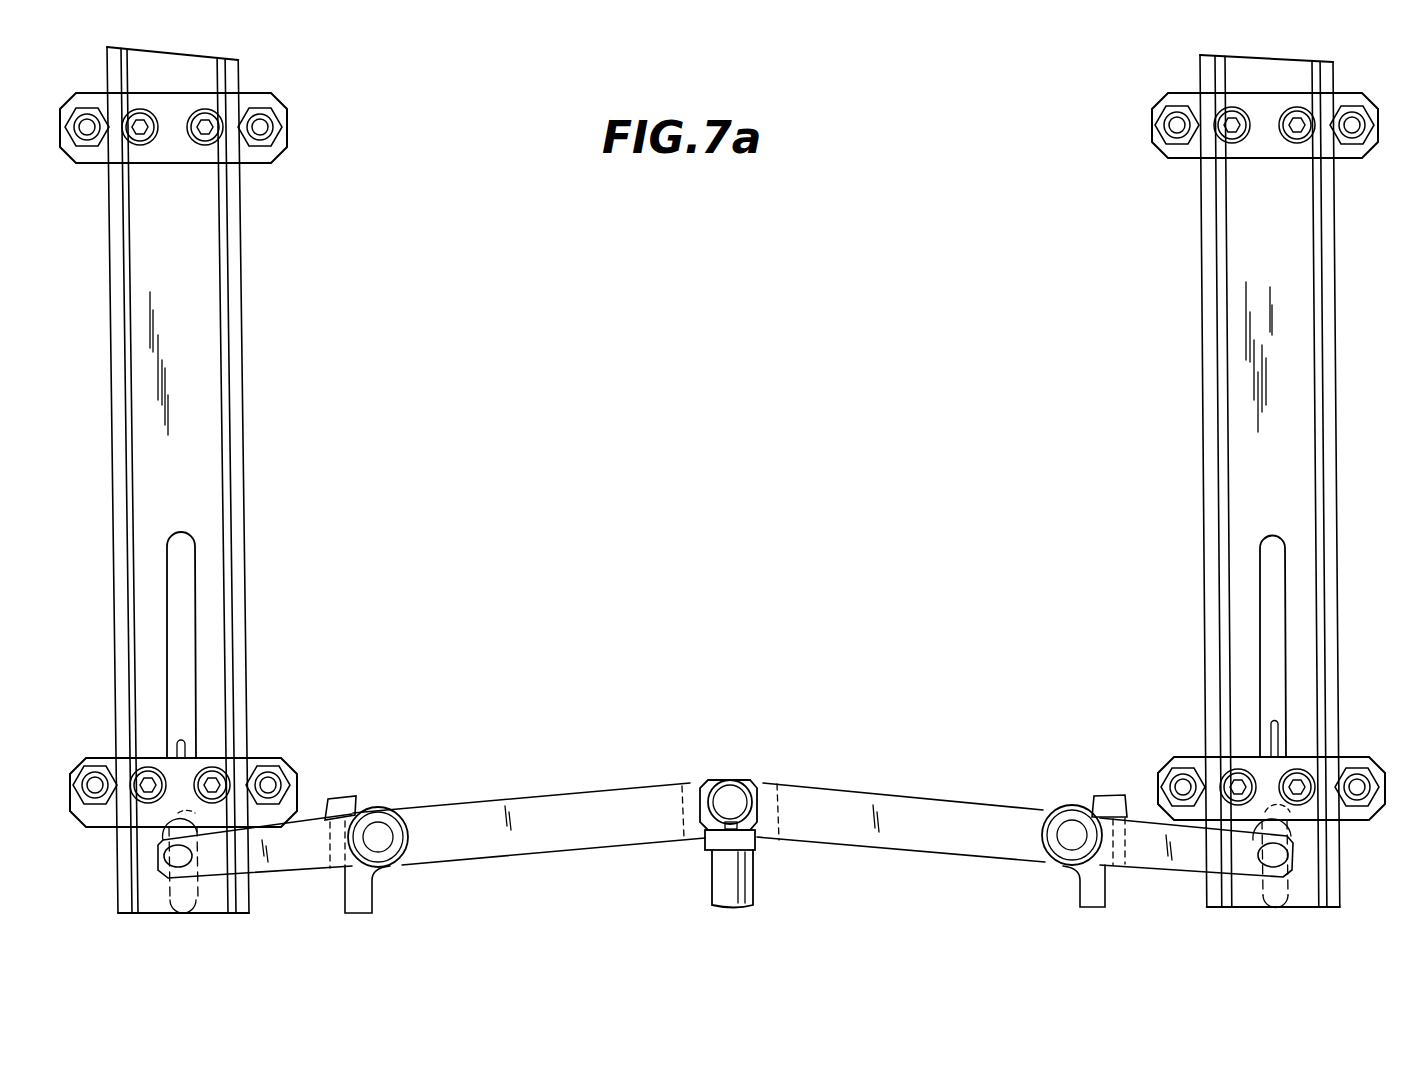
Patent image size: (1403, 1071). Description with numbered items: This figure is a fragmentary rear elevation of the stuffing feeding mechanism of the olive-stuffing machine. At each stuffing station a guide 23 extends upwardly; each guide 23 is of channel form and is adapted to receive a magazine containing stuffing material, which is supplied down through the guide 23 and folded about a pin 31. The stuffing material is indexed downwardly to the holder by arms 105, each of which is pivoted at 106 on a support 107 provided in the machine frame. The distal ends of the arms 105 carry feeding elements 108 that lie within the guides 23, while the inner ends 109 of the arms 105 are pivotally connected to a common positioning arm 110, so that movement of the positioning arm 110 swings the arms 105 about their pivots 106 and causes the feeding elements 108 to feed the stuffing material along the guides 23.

The guide 23 is at (184, 336).
The pin 31 is at (187, 745).
The arms 105 is at (319, 860).
The pivot 106 is at (378, 830).
The supports 107 is at (372, 898).
The feeding elements 108 is at (166, 852).
The inner ends 109 is at (767, 781).
The positioning arm 110 is at (733, 878).